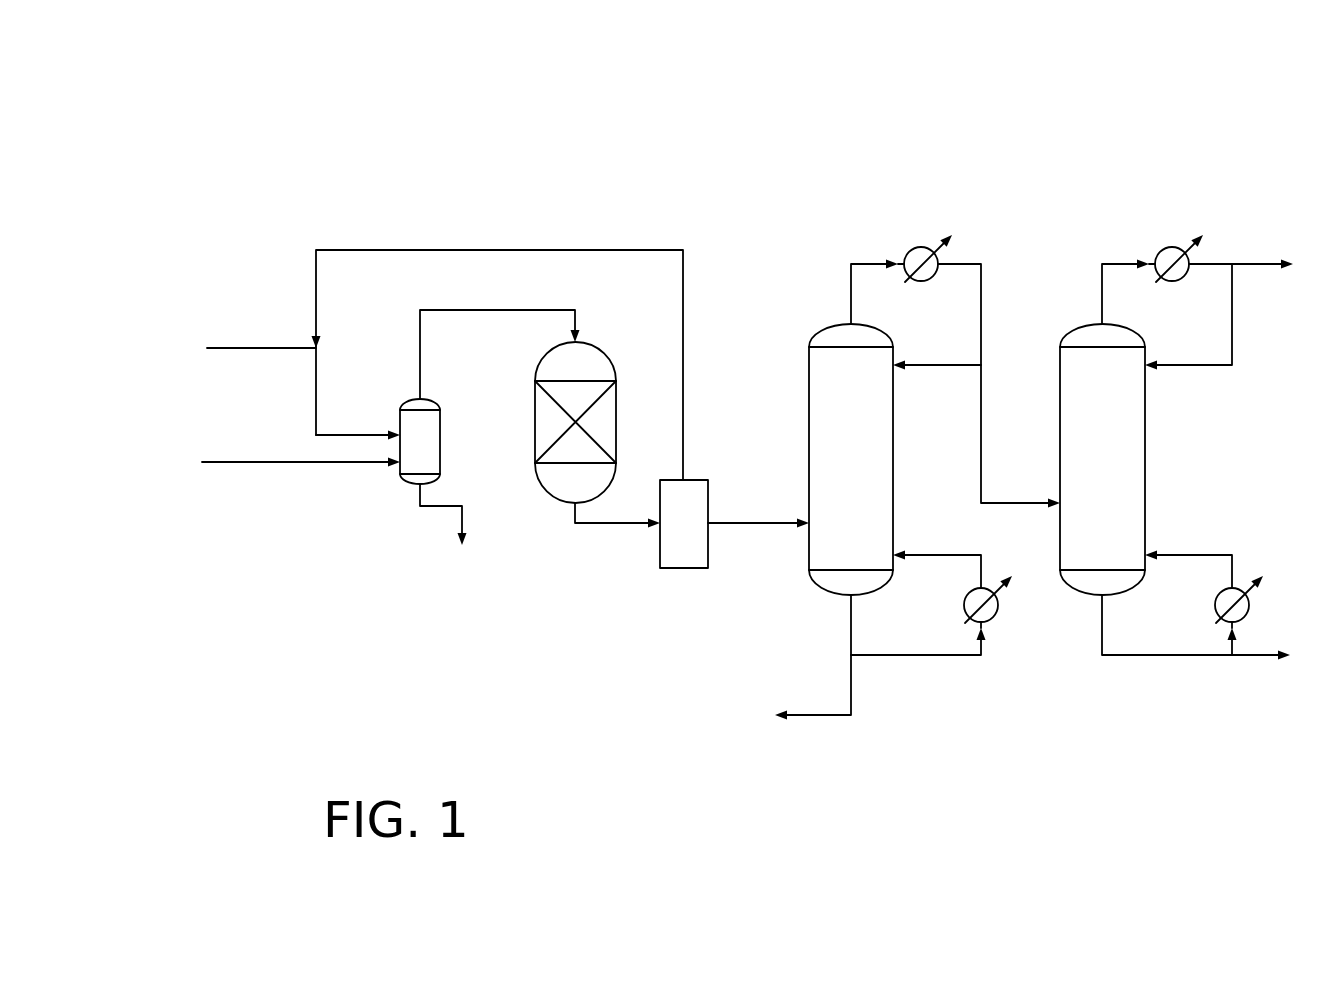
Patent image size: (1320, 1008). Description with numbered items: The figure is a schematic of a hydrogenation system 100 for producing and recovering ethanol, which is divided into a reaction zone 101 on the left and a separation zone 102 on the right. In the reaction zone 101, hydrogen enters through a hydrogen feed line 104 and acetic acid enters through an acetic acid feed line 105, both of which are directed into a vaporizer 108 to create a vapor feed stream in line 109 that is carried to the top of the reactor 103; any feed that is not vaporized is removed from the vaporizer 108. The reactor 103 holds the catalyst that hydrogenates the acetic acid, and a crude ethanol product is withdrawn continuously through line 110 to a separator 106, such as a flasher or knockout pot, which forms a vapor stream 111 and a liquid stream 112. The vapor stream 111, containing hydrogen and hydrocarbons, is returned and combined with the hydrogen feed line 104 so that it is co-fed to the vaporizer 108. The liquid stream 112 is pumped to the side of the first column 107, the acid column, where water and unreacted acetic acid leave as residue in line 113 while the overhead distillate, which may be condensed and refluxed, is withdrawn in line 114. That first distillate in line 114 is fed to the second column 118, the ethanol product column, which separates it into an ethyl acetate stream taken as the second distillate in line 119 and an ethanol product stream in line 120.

The hydrogenation system 100 is at (348, 190).
The reaction zone 101 is at (364, 583).
The separation zone 102 is at (1136, 727).
The reactor 103 is at (590, 362).
The hydrogen feed line 104 is at (232, 350).
The acetic acid feed line 105 is at (247, 464).
The separator 106 is at (683, 568).
The first column 107 is at (820, 412).
The vaporizer 108 is at (418, 427).
The vapor feed stream line 109 is at (453, 309).
The crude ethanol product line 110 is at (600, 525).
The vapor stream 111 is at (548, 249).
The liquid stream 112 is at (745, 525).
The residue line 113 is at (851, 625).
The first distillate line 114 is at (866, 262).
The second column 118 is at (1130, 452).
The second distillate line 119 is at (1112, 262).
The ethanol product stream line 120 is at (1102, 635).